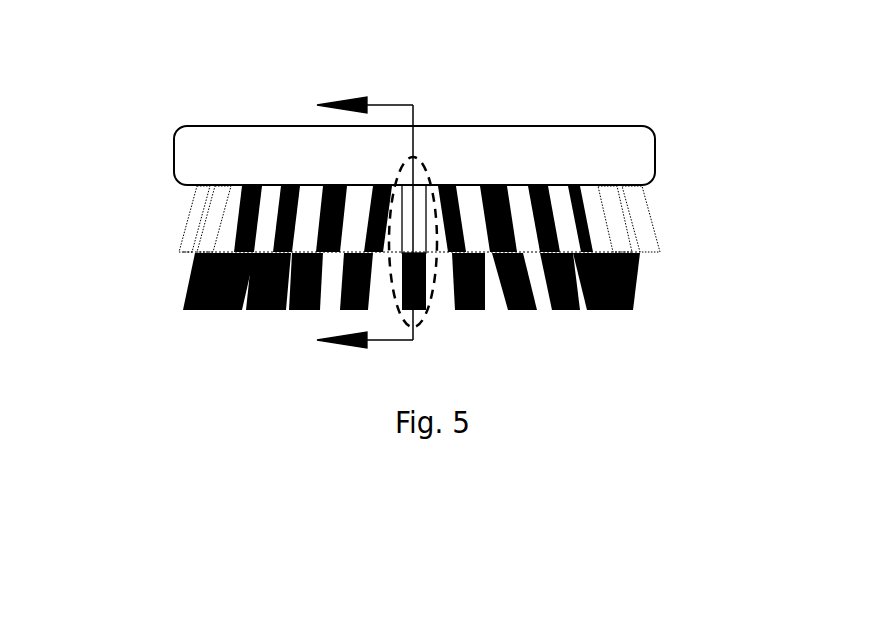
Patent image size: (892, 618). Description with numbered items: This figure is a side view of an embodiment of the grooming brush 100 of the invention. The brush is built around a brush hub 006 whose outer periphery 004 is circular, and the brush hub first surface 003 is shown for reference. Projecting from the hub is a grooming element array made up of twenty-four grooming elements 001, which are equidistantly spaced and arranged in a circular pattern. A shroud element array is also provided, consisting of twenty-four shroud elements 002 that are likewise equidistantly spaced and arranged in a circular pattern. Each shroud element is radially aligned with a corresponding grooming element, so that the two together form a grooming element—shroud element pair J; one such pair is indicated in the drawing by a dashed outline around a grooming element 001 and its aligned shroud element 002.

The grooming brush 100 is at (412, 194).
The grooming element 001 is at (180, 313).
The shroud element 002 is at (176, 211).
The brush hub first surface 003 is at (510, 185).
The outer periphery 004 is at (655, 153).
The brush hub 006 is at (168, 113).
The grooming element—shroud element pair J is at (423, 315).